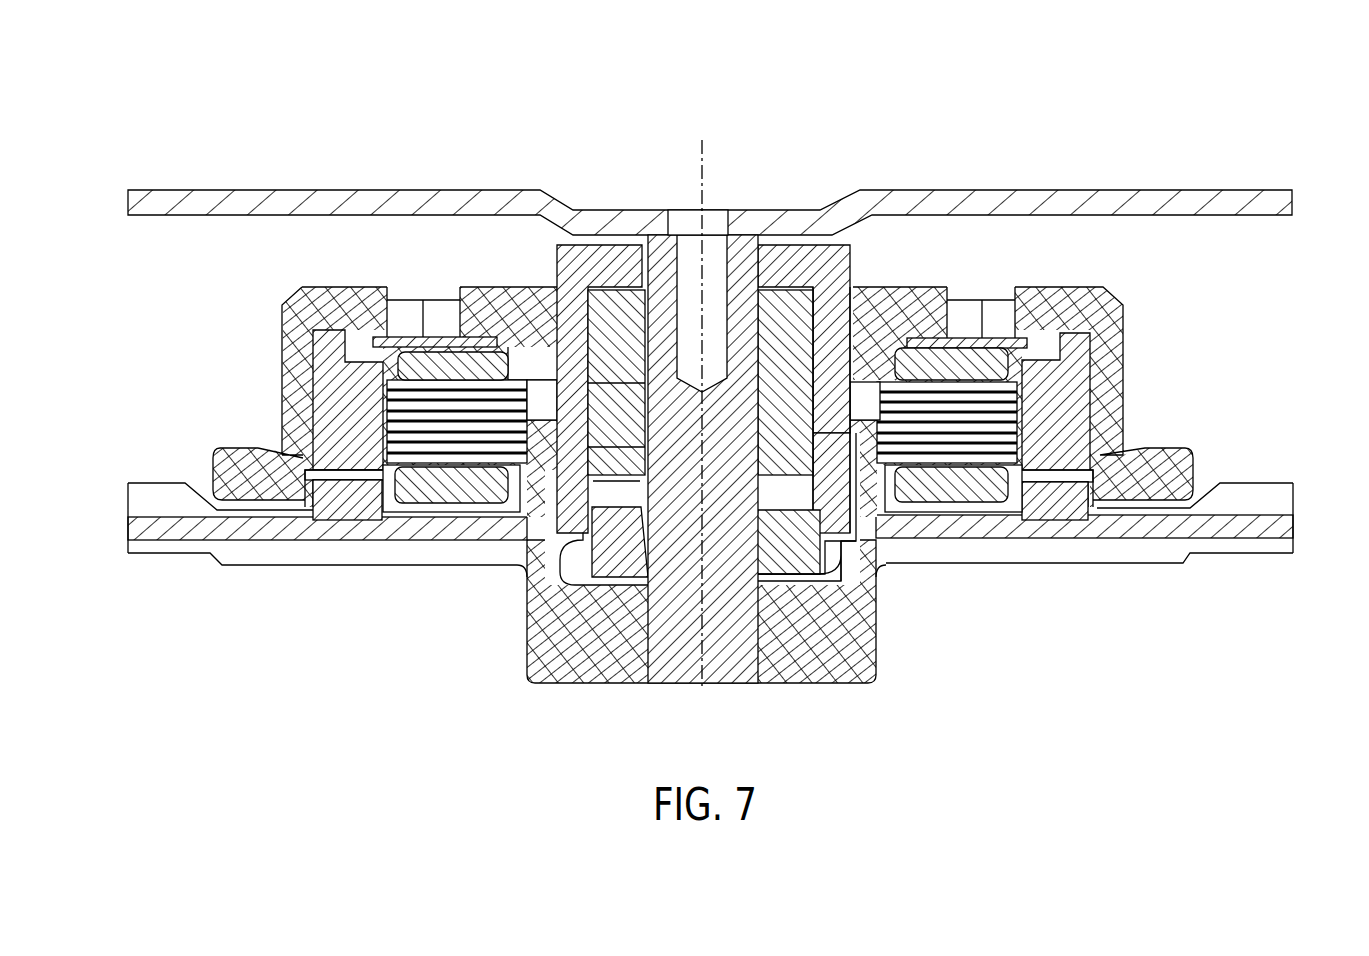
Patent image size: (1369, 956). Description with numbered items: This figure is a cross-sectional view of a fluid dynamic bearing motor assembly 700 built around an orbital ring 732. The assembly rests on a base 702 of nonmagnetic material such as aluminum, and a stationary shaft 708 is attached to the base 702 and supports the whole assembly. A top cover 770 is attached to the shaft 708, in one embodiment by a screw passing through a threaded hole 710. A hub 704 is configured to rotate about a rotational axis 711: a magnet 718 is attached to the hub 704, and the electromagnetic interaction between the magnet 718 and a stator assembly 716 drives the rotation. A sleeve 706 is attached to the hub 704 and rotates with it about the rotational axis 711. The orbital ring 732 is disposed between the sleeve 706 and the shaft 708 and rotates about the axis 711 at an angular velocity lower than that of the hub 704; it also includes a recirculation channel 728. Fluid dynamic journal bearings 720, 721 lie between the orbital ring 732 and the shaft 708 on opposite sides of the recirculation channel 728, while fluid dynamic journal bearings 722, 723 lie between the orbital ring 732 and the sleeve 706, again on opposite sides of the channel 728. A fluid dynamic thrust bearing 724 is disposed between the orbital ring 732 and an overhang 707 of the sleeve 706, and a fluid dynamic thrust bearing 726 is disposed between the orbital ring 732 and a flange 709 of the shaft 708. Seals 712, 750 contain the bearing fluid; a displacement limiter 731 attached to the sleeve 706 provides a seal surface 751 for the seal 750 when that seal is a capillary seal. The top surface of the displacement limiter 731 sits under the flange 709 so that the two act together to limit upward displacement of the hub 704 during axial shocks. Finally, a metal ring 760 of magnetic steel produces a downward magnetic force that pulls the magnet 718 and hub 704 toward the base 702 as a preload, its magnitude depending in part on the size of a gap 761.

The fluid dynamic bearing motor assembly 700 is at (1285, 84).
The base 702 is at (135, 535).
The hub 704 is at (333, 287).
The sleeve 706 is at (548, 270).
The overhang 707 is at (800, 262).
The shaft 708 is at (666, 282).
The flange 709 is at (853, 652).
The threaded hole 710 is at (721, 222).
The rotational axis 711 is at (727, 590).
The seal 712 is at (783, 330).
The stator assembly 716 is at (940, 360).
The magnet 718 is at (1045, 362).
The fluid dynamic journal bearing 720 is at (690, 440).
The fluid dynamic journal bearing 721 is at (700, 235).
The fluid dynamic journal bearing 722 is at (580, 428).
The fluid dynamic journal bearing 723 is at (562, 312).
The fluid dynamic thrust bearing 724 is at (602, 288).
The fluid dynamic thrust bearing 726 is at (600, 495).
The recirculation channel 728 is at (540, 378).
The displacement limiter 731 is at (853, 610).
The orbital ring 732 is at (822, 285).
The seal 750 is at (752, 590).
The seal surface 751 is at (770, 590).
The metal ring 760 is at (1070, 533).
The gap 761 is at (1018, 532).
The top cover 770 is at (1223, 190).